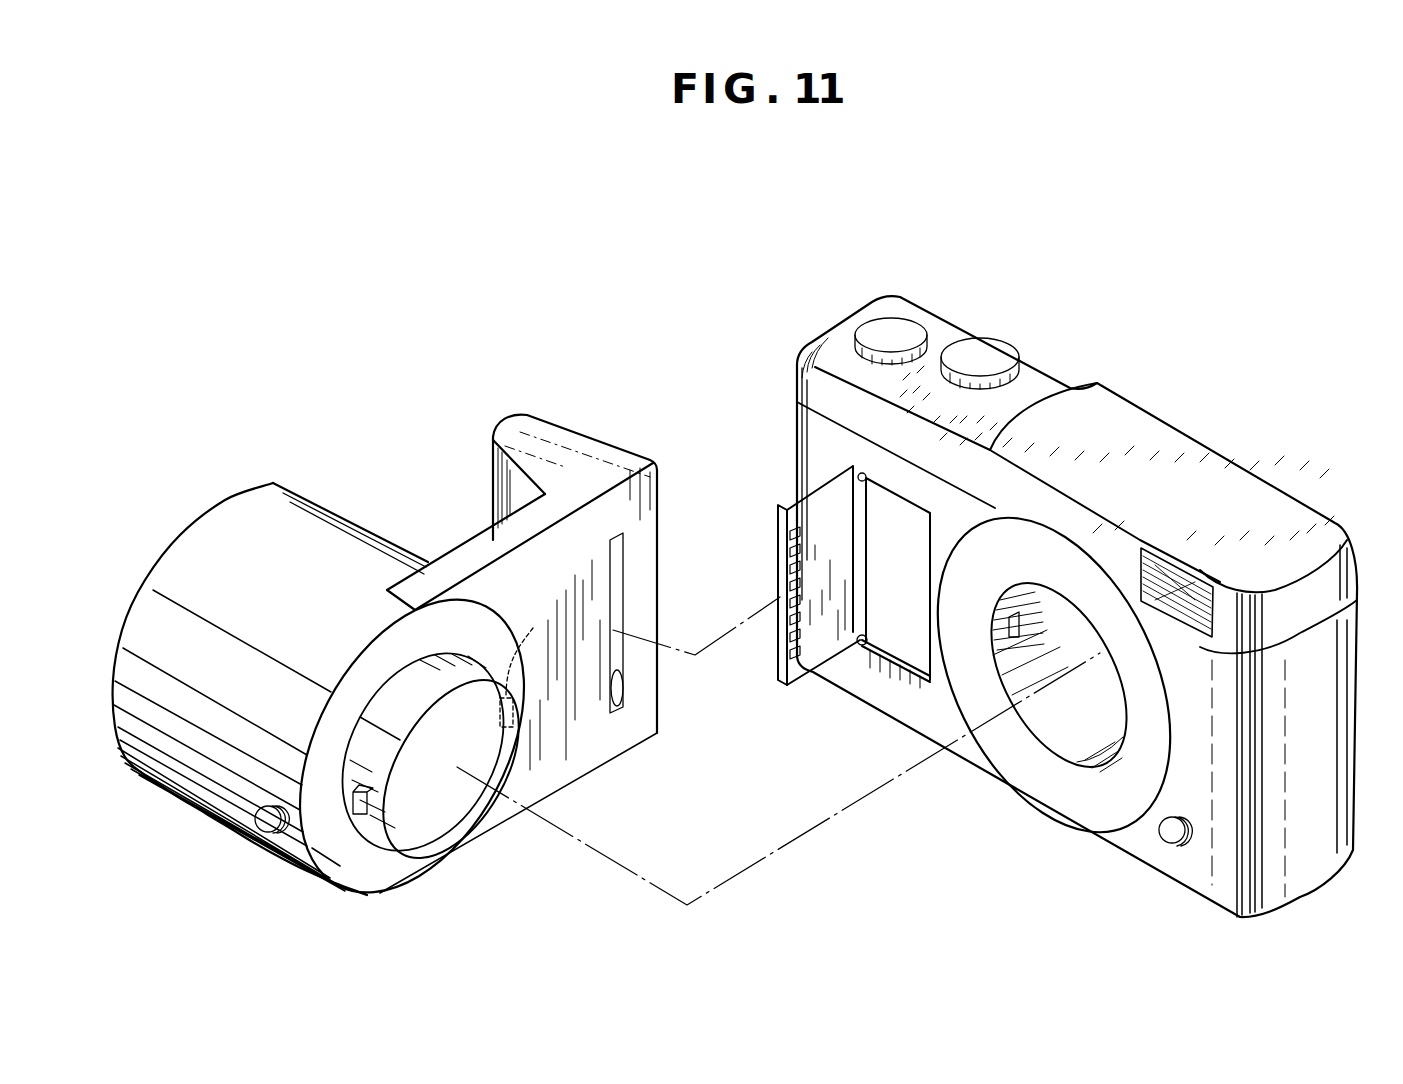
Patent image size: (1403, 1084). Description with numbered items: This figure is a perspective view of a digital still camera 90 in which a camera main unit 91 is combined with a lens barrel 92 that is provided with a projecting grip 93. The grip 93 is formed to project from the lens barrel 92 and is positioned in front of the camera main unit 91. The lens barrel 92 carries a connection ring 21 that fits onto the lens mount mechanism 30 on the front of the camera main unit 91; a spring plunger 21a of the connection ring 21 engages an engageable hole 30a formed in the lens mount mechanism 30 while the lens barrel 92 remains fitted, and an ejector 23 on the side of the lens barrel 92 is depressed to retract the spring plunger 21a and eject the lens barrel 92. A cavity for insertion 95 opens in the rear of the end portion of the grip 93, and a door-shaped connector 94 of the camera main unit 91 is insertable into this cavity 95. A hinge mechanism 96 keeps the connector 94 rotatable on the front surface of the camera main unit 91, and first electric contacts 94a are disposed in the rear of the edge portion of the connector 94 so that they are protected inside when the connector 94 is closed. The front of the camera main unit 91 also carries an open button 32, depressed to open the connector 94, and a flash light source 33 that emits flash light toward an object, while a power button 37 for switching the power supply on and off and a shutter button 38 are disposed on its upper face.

The digital still camera 90 is at (722, 246).
The camera main unit 91 is at (790, 343).
The lens barrel 92 is at (291, 468).
The grip 93 is at (580, 440).
The connector 94 is at (780, 668).
The first electric contacts 94a is at (792, 562).
The cavity for insertion 95 is at (625, 703).
The hinge mechanism 96 is at (862, 487).
The connection ring 21 is at (455, 830).
The spring plunger 21a is at (352, 816).
The ejector 23 is at (264, 823).
The lens mount mechanism 30 is at (1071, 720).
The engageable hole 30a is at (1008, 622).
The open button 32 is at (1172, 846).
The flash light source 33 is at (1180, 592).
The power button 37 is at (982, 350).
The shutter button 38 is at (890, 330).